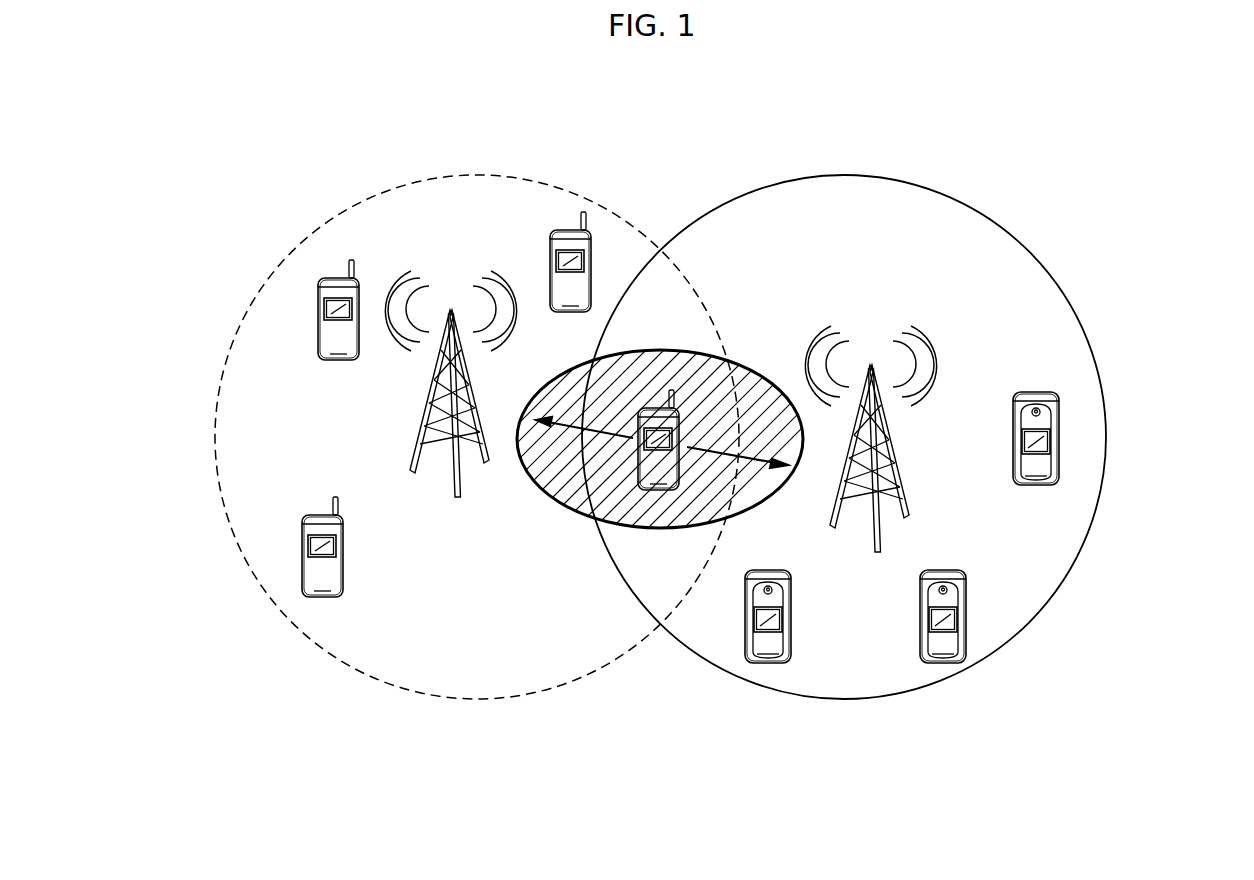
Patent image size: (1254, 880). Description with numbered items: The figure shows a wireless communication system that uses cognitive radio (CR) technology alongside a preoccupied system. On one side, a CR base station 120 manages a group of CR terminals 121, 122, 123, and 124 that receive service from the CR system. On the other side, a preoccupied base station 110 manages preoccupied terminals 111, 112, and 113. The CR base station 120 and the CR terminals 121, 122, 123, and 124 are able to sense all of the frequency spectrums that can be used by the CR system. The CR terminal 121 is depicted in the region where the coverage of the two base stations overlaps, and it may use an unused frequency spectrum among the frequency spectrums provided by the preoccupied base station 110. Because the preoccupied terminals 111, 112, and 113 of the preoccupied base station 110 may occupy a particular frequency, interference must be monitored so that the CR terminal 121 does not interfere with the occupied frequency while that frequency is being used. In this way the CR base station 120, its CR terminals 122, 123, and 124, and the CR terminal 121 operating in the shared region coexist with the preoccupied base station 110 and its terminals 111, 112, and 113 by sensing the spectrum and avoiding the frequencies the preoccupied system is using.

The preoccupied base station 110 is at (908, 502).
The preoccupied terminal 111 is at (1059, 434).
The preoccupied terminal 112 is at (940, 663).
The preoccupied terminal 113 is at (770, 663).
The CR base station 120 is at (425, 420).
The CR terminal 121 is at (660, 490).
The CR terminal 122 is at (567, 230).
The CR terminal 123 is at (318, 304).
The CR terminal 124 is at (302, 555).